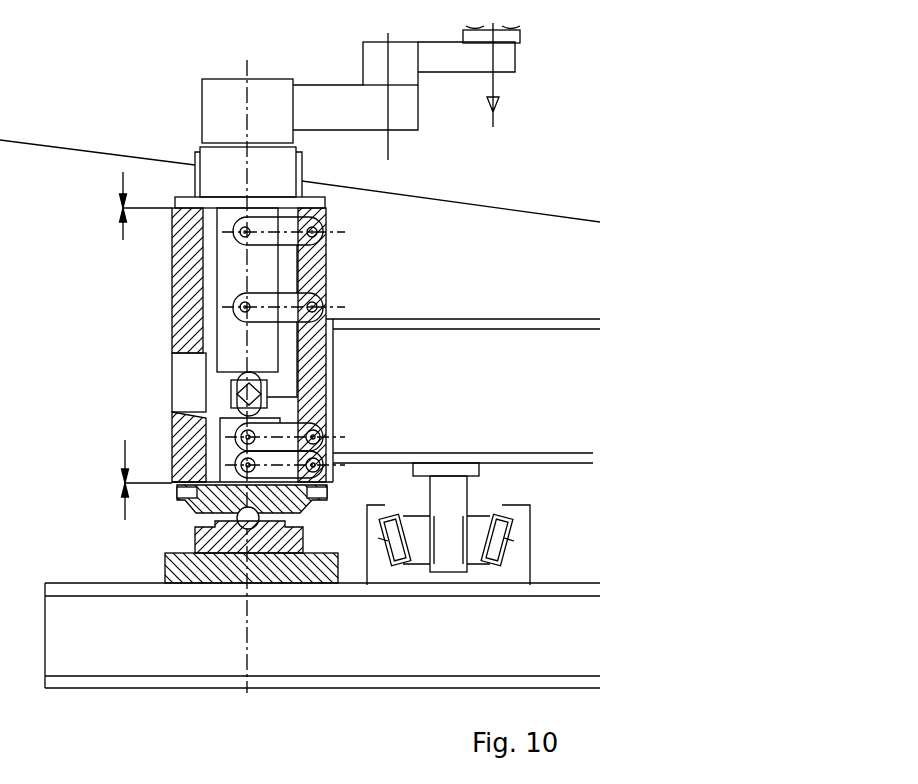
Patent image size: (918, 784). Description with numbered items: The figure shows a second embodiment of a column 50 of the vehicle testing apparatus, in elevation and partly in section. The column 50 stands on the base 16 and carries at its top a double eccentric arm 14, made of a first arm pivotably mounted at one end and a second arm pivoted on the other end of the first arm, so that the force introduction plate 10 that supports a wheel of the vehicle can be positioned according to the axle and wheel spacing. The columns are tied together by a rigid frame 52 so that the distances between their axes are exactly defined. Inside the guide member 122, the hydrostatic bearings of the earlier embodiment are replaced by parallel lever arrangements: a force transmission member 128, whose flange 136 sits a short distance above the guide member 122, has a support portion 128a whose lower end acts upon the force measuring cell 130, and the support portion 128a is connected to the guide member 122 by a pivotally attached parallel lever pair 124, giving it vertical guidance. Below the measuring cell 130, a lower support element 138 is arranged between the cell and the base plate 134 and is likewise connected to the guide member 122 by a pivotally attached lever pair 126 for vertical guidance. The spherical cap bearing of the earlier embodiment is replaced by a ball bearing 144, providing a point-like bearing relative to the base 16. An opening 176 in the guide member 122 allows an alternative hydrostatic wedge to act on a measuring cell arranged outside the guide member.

The force introduction plate 10 is at (520, 38).
The double eccentric arm 14 is at (337, 72).
The base 16 is at (343, 592).
The column 50 is at (88, 304).
The rigid frame 52 is at (425, 330).
The guide member 122 is at (180, 321).
The parallel lever pair 124 is at (326, 306).
The lever pair 126 is at (338, 445).
The force transmission member 128 is at (197, 173).
The support portion 128a is at (225, 267).
The force measuring cell 130 is at (310, 393).
The base plate 134 is at (335, 492).
The flange 136 is at (328, 202).
The lower support element 138 is at (225, 445).
The ball bearing 144 is at (238, 515).
The opening 176 is at (182, 383).